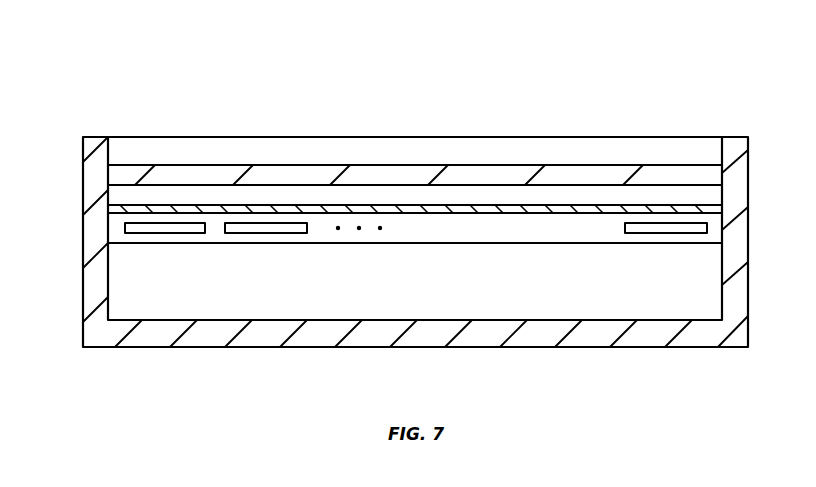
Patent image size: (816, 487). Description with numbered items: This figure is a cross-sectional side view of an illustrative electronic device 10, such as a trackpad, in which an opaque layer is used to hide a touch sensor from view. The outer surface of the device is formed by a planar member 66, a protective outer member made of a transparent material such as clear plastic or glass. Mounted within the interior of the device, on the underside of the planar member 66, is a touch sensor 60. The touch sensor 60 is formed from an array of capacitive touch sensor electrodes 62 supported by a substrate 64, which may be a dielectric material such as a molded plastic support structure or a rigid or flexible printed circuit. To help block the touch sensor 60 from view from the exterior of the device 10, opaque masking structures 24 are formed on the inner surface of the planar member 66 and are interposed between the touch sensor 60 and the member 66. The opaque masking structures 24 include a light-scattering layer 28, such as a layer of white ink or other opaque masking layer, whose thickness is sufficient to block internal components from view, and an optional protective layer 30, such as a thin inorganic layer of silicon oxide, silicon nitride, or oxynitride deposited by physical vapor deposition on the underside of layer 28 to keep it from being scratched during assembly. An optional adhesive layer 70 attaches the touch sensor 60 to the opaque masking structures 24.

The electronic device 10 is at (621, 86).
The opaque masking structures 24 is at (78, 165).
The light-scattering layer 28 is at (135, 175).
The protective layer 30 is at (198, 192).
The touch sensor 60 is at (481, 258).
The capacitive touch sensor electrodes 62 is at (195, 234).
The substrate 64 is at (605, 246).
The planar member 66 is at (658, 150).
The adhesive layer 70 is at (700, 207).